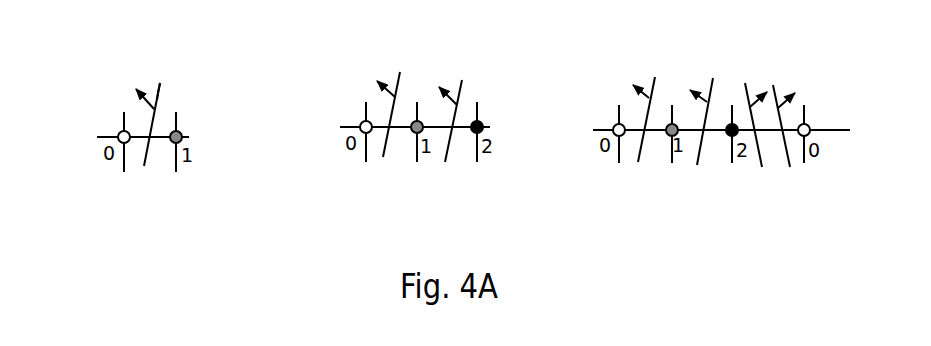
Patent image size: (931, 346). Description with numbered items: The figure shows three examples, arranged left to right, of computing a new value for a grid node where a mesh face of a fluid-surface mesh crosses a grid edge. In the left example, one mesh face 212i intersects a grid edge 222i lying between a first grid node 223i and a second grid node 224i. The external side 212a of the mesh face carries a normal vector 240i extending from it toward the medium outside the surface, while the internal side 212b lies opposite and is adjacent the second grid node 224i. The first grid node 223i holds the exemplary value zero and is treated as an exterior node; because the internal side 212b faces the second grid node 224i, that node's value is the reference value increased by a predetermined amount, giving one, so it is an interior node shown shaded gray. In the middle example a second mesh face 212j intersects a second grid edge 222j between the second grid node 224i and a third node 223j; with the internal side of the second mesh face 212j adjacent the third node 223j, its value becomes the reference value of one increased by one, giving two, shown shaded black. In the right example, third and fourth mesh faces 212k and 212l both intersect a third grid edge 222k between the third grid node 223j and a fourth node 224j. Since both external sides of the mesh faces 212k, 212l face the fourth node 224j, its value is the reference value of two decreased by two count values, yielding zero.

The external side 212a is at (153, 82).
The internal side 212b is at (165, 92).
The mesh face 212i is at (653, 73).
The second mesh face 212j is at (712, 75).
The third mesh face 212k is at (747, 78).
The fourth mesh face 212l is at (775, 80).
The normal vector 240i is at (128, 85).
The first grid node 223i is at (615, 120).
The third grid node 223j is at (727, 142).
The second grid node 224i is at (665, 140).
The fourth grid node 224j is at (810, 123).
The grid edge 222i is at (157, 143).
The second grid edge 222j is at (467, 138).
The third grid edge 222k is at (767, 137).